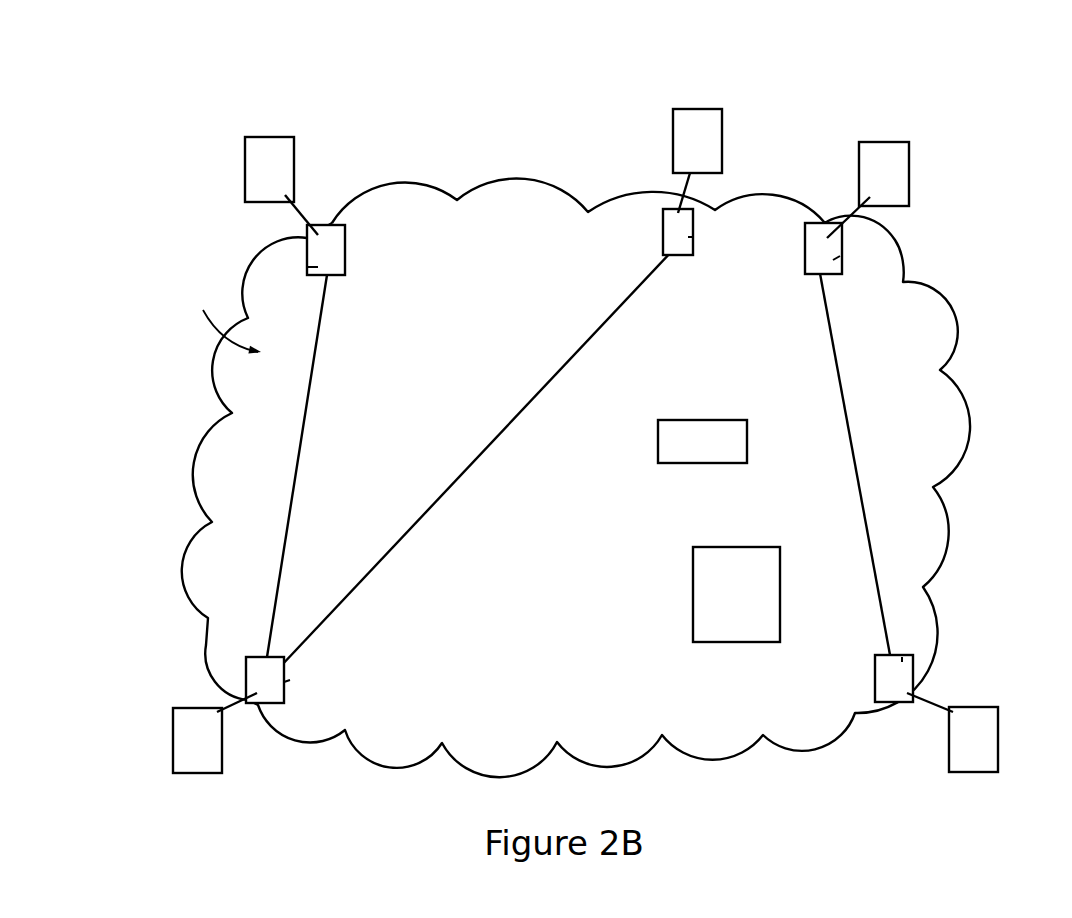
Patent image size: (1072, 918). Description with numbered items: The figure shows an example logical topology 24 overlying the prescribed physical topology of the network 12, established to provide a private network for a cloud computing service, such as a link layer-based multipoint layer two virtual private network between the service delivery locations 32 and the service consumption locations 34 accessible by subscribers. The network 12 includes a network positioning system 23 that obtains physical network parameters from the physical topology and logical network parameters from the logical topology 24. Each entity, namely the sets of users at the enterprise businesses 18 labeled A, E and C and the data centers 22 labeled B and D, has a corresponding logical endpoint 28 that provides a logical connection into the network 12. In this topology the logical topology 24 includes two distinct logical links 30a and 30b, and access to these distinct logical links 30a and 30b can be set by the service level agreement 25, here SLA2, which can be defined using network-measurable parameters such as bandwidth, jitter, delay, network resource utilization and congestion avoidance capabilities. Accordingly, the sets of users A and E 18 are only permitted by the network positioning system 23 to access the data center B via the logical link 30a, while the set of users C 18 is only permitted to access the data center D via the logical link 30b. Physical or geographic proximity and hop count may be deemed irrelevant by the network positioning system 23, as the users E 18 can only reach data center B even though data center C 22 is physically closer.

The network 12 is at (407, 185).
The enterprise businesses 18 is at (263, 143).
The data centers 22 is at (889, 150).
The network positioning system 23 is at (736, 594).
The logical topology 24 is at (219, 321).
The service level agreement 25 is at (703, 463).
The logical endpoint 28 is at (338, 246).
The logical link 30a is at (295, 503).
The logical link 30b is at (857, 458).
The service delivery locations 32 is at (833, 260).
The service consumption locations 34 is at (318, 267).